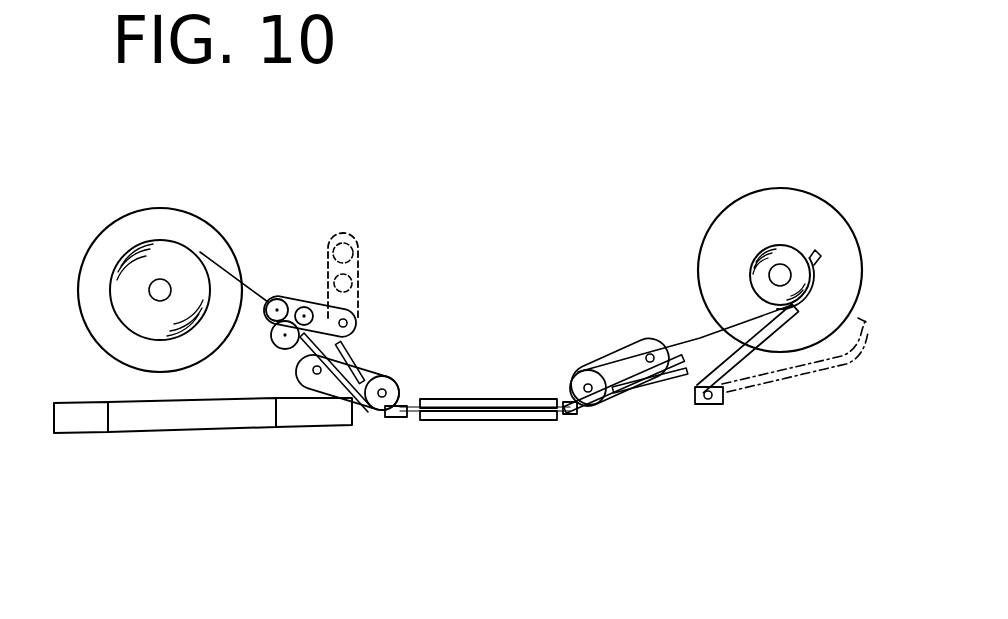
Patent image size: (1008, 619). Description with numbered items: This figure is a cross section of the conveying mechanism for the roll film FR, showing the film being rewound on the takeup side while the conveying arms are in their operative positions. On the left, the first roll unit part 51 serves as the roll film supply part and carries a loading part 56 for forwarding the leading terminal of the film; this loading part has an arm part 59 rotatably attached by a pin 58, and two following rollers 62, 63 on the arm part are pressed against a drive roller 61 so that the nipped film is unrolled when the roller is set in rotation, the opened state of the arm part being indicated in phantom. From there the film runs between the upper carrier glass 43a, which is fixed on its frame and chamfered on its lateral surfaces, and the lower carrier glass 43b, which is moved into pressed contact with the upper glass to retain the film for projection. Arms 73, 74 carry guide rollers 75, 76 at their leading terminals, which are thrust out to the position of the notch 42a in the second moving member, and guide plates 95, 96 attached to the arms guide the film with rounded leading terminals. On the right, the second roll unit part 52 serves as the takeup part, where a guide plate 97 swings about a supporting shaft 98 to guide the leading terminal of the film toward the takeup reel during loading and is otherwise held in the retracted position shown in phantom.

The first roll unit part 51 is at (155, 195).
The roll film FR is at (223, 268).
The second roll unit part 52 is at (770, 190).
The loading part 56 is at (353, 222).
The pin 58 is at (355, 312).
The arm part 59 is at (358, 320).
The drive roller 61 is at (280, 346).
The following roller 62 is at (277, 299).
The following roller 63 is at (304, 307).
The arm 73 is at (372, 372).
The arm 74 is at (612, 352).
The guide roller 75 is at (398, 388).
The guide roller 76 is at (584, 372).
The notch 42a is at (320, 418).
The upper carrier glass 43a is at (494, 405).
The lower carrier glass 43b is at (494, 420).
The guide plate 95 is at (388, 420).
The guide plate 96 is at (604, 416).
The guide plate 97 is at (760, 318).
The supporting shaft 98 is at (709, 406).